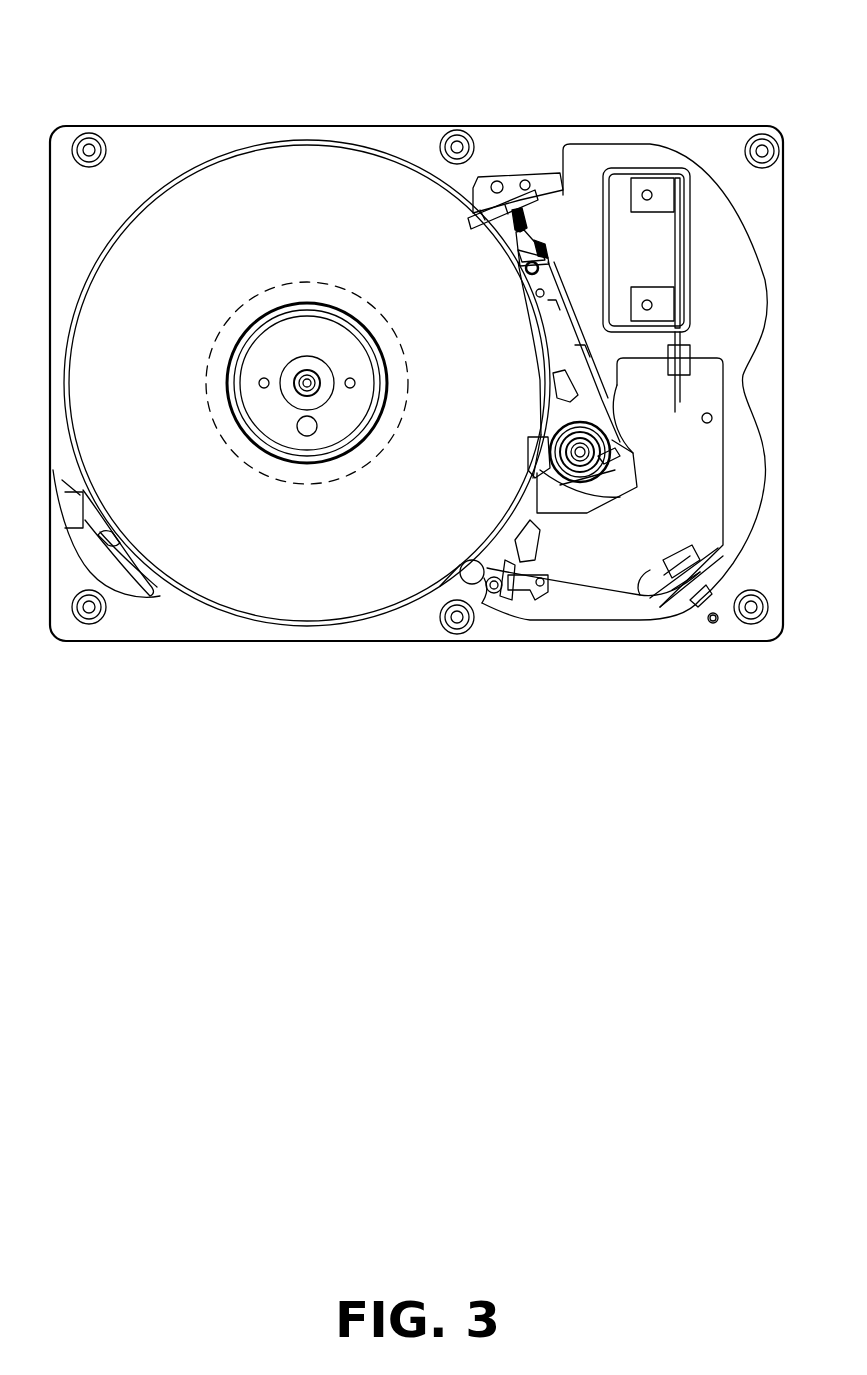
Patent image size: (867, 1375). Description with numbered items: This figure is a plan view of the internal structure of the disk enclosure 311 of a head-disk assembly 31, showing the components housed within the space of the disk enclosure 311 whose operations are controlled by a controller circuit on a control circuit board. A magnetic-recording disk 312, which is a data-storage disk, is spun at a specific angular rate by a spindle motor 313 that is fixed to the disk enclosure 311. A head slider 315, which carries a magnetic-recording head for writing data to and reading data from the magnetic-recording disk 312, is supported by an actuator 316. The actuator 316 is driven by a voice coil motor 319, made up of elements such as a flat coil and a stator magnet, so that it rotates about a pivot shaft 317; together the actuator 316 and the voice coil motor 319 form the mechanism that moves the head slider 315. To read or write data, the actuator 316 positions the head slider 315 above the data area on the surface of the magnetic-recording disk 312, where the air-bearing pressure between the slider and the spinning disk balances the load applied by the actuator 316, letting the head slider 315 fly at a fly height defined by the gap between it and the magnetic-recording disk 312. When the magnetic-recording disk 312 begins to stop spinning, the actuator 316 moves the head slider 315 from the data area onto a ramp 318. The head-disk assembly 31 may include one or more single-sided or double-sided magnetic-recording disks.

The head-disk assembly 31 is at (186, 21).
The disk enclosure 311 is at (353, 127).
The magnetic-recording disk 312 is at (490, 600).
The spindle motor 313 is at (220, 327).
The head slider 315 is at (513, 220).
The actuator 316 is at (533, 330).
The pivot shaft 317 is at (555, 440).
The ramp 318 is at (523, 205).
The voice coil motor 319 is at (590, 605).